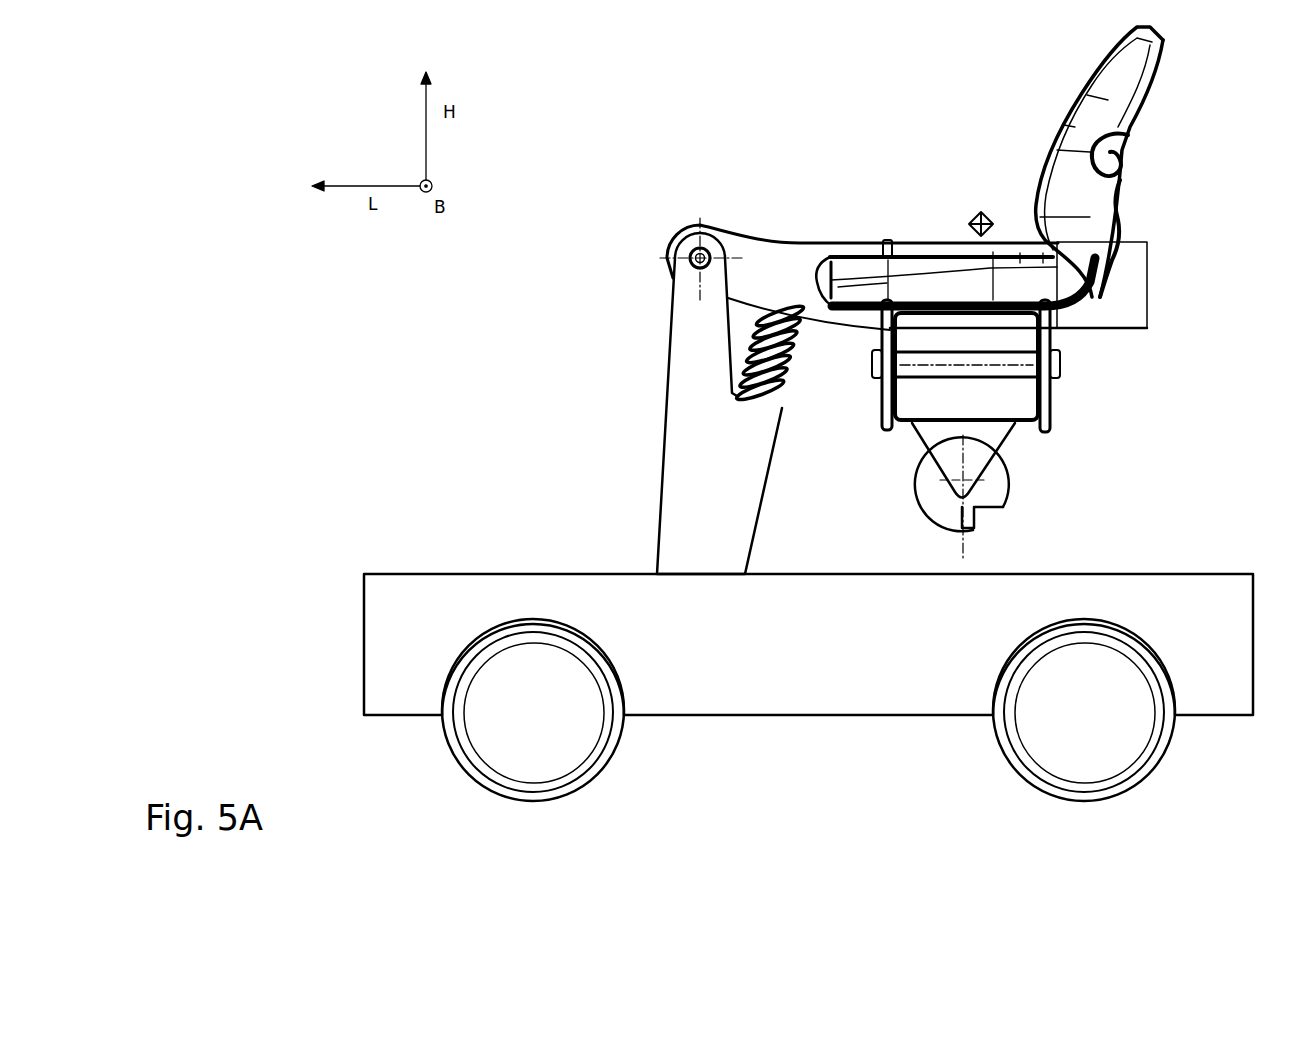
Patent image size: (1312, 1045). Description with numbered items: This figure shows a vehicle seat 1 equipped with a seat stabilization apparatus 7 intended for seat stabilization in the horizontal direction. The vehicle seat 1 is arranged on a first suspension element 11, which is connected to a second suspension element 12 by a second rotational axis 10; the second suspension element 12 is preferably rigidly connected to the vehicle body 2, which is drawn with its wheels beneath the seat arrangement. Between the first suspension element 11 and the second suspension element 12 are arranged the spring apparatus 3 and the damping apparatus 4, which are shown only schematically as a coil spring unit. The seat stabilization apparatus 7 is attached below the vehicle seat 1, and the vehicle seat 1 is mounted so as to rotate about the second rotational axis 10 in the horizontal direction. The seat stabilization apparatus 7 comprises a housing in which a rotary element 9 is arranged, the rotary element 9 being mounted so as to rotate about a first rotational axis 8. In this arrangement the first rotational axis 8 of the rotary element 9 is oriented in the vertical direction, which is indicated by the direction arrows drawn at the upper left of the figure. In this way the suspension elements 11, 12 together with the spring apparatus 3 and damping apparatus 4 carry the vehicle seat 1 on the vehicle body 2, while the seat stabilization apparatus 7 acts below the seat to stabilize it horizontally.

The vehicle seat 1 is at (882, 112).
The vehicle body 2 is at (1230, 621).
The spring apparatus 3 is at (795, 367).
The damping apparatus 4 is at (792, 376).
The seat stabilization apparatus 7 is at (1162, 432).
The first rotational axis 8 is at (965, 545).
The rotary element 9 is at (1003, 480).
The second rotational axis 10 is at (690, 252).
The first suspension element 11 is at (773, 258).
The second suspension element 12 is at (682, 412).